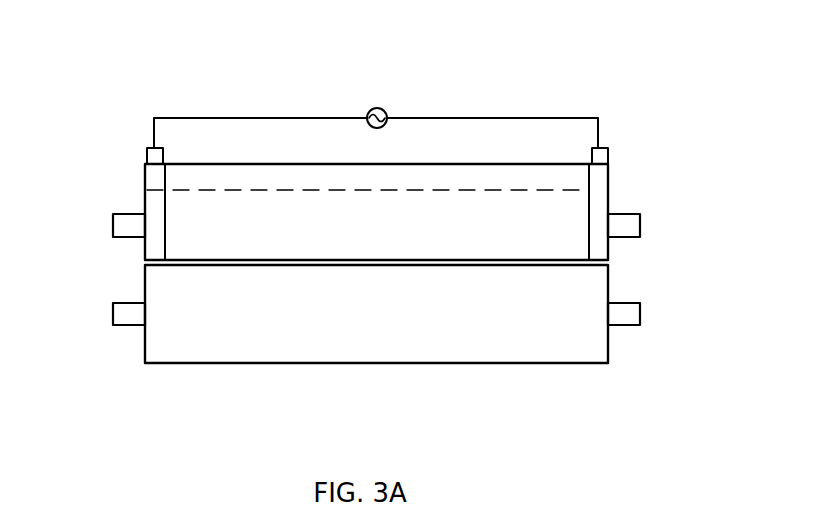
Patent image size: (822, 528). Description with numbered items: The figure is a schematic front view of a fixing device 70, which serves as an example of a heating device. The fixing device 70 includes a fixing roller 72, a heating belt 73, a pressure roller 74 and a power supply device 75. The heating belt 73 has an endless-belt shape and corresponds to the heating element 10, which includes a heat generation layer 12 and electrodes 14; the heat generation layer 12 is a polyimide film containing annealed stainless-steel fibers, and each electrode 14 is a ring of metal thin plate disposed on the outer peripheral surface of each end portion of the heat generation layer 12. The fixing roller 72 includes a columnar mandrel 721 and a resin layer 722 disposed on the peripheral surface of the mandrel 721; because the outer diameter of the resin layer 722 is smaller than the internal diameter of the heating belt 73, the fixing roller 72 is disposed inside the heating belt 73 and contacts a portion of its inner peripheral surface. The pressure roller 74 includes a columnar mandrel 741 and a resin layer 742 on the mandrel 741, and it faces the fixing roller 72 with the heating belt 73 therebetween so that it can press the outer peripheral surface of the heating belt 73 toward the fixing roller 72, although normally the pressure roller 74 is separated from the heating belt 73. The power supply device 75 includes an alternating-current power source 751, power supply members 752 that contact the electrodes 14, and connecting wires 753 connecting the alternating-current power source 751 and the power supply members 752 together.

The fixing device 70 is at (646, 96).
The power supply device 75 is at (180, 64).
The alternating-current power source 751 is at (366, 115).
The power supply member 752 is at (163, 148).
The connecting wire 753 is at (245, 118).
The heating belt 73 is at (532, 64).
The heating element 10 is at (336, 141).
The heat generation layer 12 is at (523, 163).
The electrode 14 is at (589, 183).
The fixing roller 72 is at (733, 192).
The mandrel 721 is at (113, 221).
The resin layer 722 is at (589, 190).
The pressure roller 74 is at (562, 408).
The mandrel 741 is at (113, 305).
The resin layer 742 is at (585, 353).